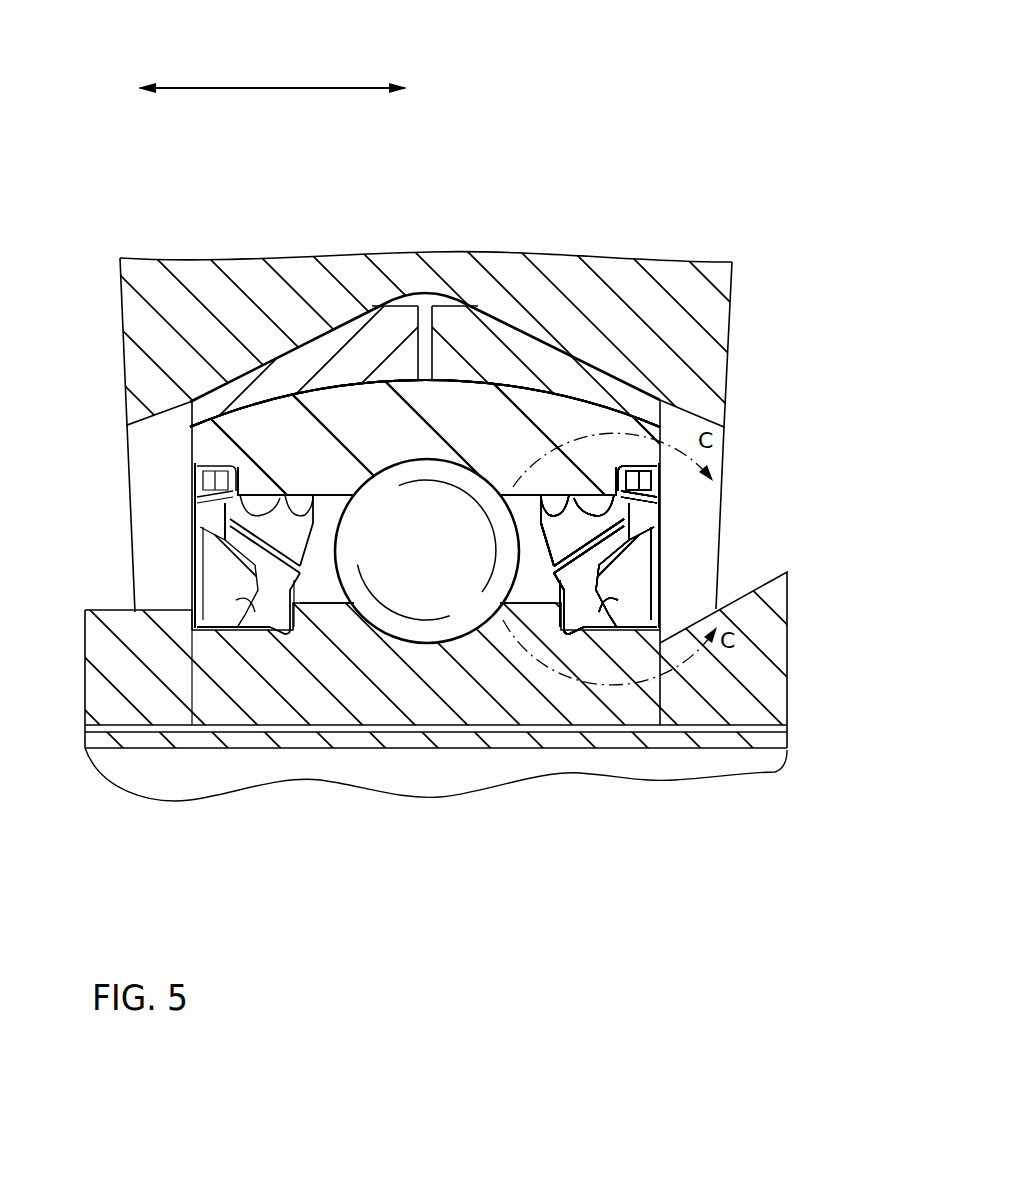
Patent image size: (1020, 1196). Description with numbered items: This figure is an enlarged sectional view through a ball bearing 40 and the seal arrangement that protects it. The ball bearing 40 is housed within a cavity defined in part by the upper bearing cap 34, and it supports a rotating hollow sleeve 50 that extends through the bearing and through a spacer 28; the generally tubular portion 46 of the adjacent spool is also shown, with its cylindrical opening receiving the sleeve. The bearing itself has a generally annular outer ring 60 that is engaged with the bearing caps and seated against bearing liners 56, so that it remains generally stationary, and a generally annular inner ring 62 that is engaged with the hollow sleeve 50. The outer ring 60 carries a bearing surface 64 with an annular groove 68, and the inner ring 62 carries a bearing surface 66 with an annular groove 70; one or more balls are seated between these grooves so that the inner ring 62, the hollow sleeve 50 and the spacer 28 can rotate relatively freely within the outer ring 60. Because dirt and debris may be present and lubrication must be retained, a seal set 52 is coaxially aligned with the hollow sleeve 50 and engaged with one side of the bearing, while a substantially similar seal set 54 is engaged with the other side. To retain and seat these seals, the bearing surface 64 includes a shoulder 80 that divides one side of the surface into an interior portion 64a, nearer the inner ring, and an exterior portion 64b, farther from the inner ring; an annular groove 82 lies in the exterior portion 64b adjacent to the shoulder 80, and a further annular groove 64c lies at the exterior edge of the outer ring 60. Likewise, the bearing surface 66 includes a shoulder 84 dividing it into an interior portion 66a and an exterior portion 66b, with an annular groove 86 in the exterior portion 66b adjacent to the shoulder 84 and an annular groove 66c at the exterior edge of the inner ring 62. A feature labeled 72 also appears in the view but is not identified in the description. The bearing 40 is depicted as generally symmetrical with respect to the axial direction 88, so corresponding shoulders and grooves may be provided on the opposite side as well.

The spacer 28 is at (110, 610).
The upper bearing cap 34 is at (165, 362).
The ball bearing 40 is at (273, 400).
The generally tubular portion 46 is at (704, 715).
The hollow sleeve 50 is at (253, 743).
The seal set 52 is at (683, 547).
The seal set 54 is at (153, 543).
The bearing liners 56 is at (390, 323).
The outer ring 60 is at (260, 440).
The inner ring 62 is at (213, 707).
The bearing surface 64 is at (317, 495).
The interior portion 64a is at (555, 490).
The exterior portion 64b is at (640, 395).
The annular groove 64c is at (663, 345).
The bearing surface 66 is at (343, 603).
The interior portion 66a is at (522, 607).
The exterior portion 66b is at (637, 632).
The annular groove 66c is at (668, 640).
The annular groove 68 is at (428, 450).
The annular groove 70 is at (383, 634).
The ball bore 72 is at (437, 600).
The shoulder 80 is at (590, 500).
The annular groove 82 is at (627, 540).
The shoulder 84 is at (545, 630).
The annular groove 86 is at (580, 627).
The axial direction 88 is at (255, 87).